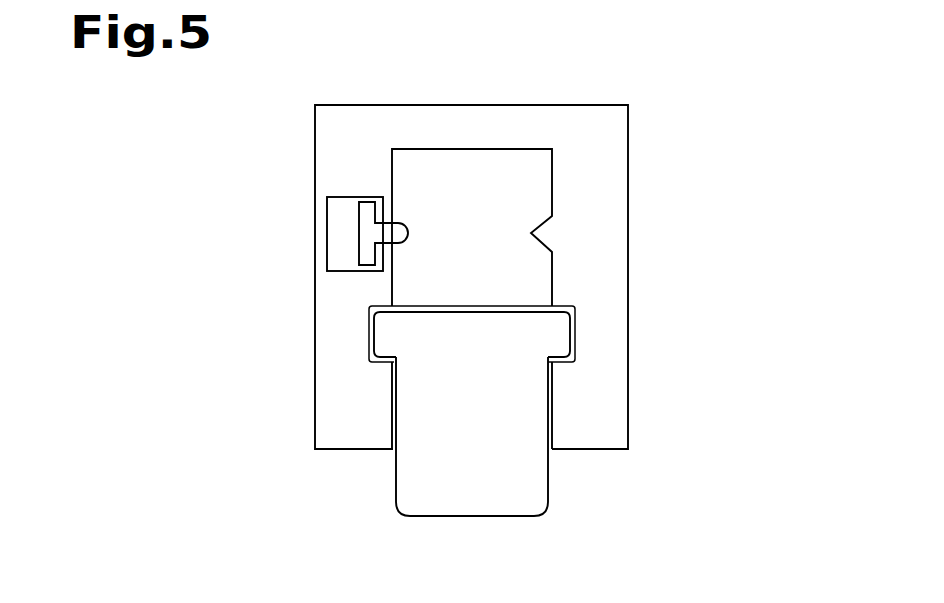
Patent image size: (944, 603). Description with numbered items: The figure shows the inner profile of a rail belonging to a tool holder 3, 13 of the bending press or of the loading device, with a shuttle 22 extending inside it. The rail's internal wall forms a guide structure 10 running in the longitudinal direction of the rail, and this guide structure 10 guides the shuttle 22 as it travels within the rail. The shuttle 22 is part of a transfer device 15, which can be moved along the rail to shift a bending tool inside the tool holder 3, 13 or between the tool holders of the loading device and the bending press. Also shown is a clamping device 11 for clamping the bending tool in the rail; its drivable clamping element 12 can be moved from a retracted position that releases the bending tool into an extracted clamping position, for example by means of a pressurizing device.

The tool holder 3 is at (628, 207).
The tool holder 13 is at (566, 277).
The guide structure 10 is at (552, 306).
The clamping device 11 is at (348, 195).
The clamping element 12 is at (408, 221).
The transfer device 15 is at (378, 449).
The shuttle 22 is at (480, 425).